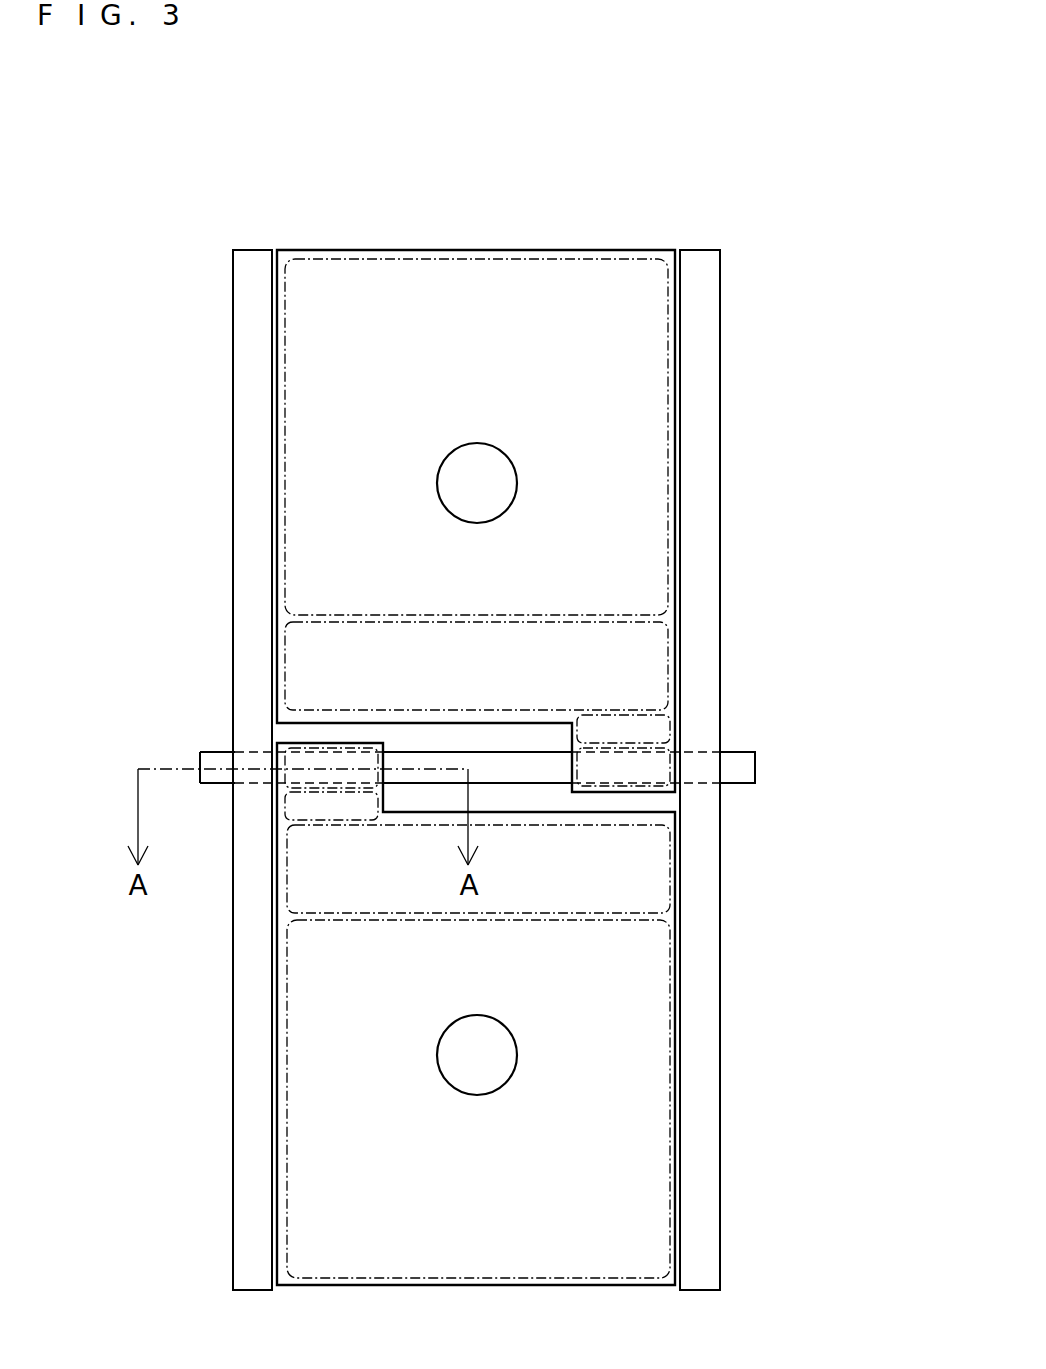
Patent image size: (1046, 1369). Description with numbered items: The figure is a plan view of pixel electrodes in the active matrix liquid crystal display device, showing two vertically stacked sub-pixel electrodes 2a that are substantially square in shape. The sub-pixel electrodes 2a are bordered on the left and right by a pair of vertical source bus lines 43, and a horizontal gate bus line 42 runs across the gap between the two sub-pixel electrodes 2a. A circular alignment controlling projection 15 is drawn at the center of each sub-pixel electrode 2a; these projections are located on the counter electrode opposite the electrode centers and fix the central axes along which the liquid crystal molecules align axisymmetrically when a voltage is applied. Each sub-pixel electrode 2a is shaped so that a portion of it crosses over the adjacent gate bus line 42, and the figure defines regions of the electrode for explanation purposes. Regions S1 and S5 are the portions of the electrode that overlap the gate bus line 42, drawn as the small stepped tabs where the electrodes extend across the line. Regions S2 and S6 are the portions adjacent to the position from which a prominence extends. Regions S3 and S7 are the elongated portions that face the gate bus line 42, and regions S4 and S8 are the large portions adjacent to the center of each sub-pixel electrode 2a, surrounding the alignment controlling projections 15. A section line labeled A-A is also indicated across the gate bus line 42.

The source bus line 43 is at (246, 267).
The sub-pixel electrode 2a is at (635, 447).
The alignment controlling projection 15 is at (480, 518).
The gate bus line 42 is at (742, 770).
The region S1 is at (280, 781).
The region S2 is at (280, 807).
The region S3 is at (280, 873).
The region S4 is at (280, 1085).
The region S5 is at (670, 764).
The region S6 is at (670, 730).
The region S7 is at (670, 650).
The region S8 is at (670, 378).